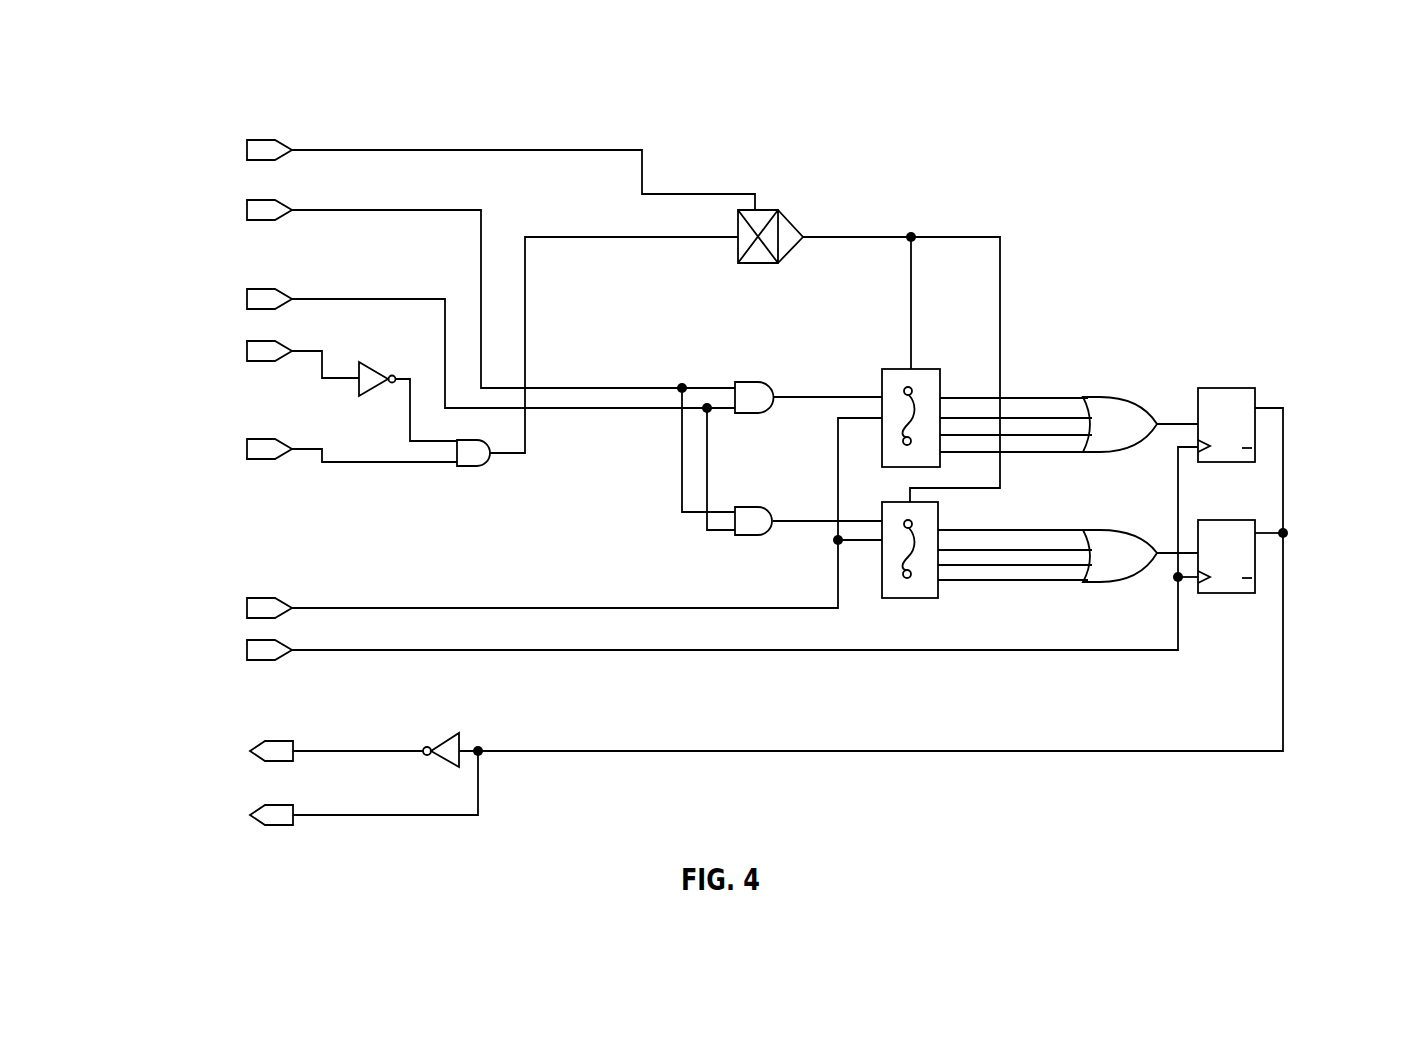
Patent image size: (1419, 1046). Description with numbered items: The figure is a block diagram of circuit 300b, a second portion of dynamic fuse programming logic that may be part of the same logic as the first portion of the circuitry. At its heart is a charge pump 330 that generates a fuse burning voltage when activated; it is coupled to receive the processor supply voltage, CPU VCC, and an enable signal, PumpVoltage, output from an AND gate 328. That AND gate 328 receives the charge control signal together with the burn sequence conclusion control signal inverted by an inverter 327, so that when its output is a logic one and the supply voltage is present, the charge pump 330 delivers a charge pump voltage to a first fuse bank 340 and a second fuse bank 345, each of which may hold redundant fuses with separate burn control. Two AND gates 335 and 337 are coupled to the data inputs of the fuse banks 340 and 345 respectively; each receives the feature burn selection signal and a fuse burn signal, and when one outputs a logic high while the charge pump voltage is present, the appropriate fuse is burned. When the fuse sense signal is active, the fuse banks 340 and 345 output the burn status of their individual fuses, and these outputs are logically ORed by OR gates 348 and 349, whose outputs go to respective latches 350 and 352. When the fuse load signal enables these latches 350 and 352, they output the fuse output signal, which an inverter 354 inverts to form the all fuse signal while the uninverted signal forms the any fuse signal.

The circuit 300b is at (413, 63).
The inverter 327 is at (378, 364).
The AND gate 328 is at (490, 468).
The charge pump 330 is at (778, 211).
The AND gate 335 is at (755, 382).
The AND gate 337 is at (755, 507).
The first fuse bank 340 is at (925, 369).
The second fuse bank 345 is at (938, 517).
The OR gate 348 is at (1115, 397).
The OR gate 349 is at (1108, 530).
The latch 350 is at (1240, 388).
The latch 352 is at (1212, 520).
The inverter 354 is at (461, 737).